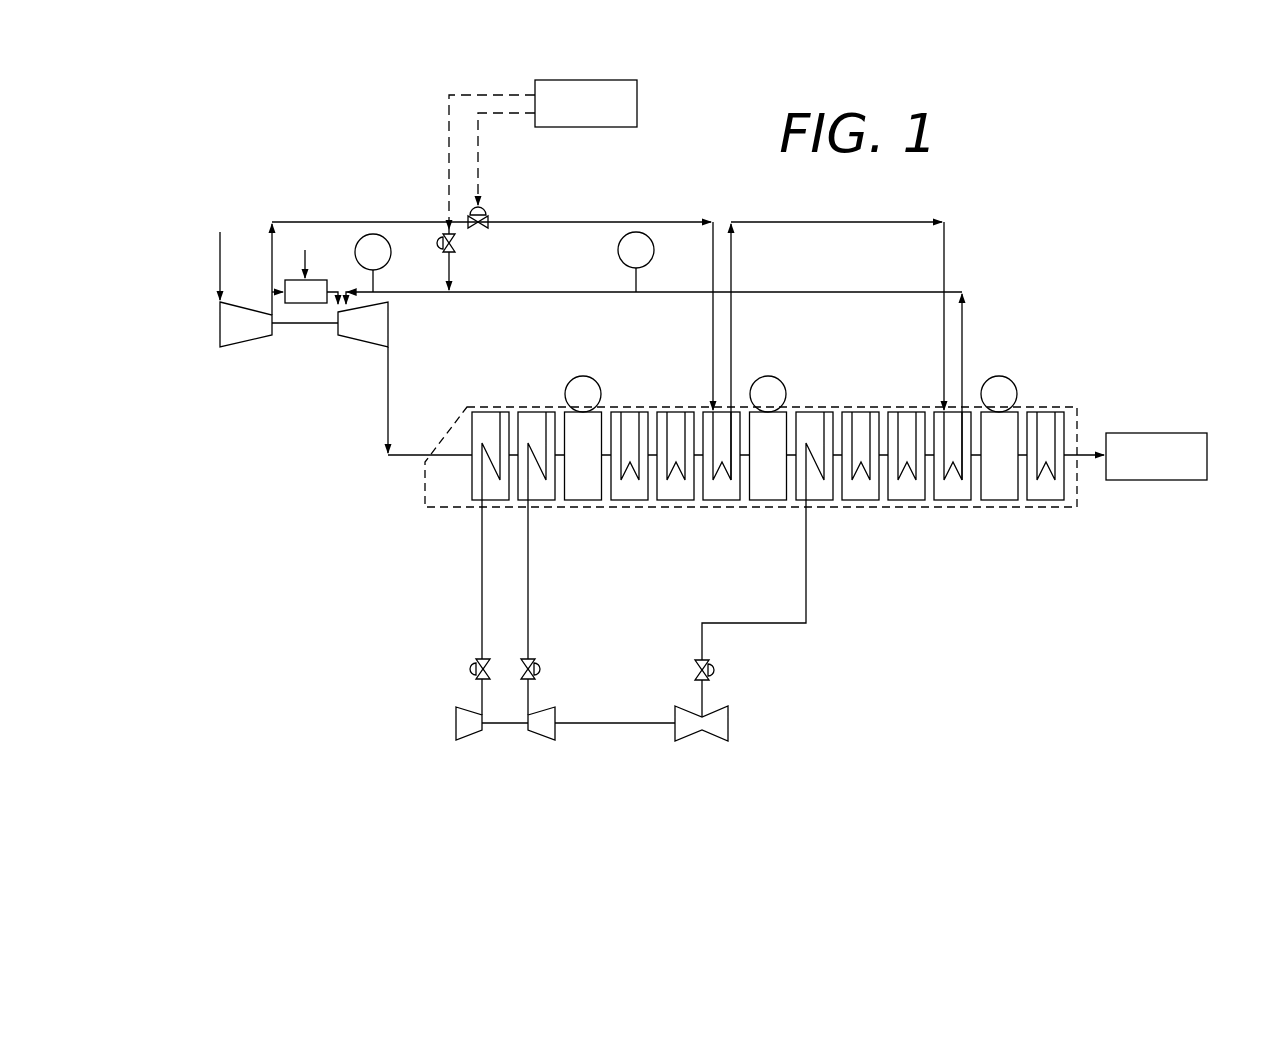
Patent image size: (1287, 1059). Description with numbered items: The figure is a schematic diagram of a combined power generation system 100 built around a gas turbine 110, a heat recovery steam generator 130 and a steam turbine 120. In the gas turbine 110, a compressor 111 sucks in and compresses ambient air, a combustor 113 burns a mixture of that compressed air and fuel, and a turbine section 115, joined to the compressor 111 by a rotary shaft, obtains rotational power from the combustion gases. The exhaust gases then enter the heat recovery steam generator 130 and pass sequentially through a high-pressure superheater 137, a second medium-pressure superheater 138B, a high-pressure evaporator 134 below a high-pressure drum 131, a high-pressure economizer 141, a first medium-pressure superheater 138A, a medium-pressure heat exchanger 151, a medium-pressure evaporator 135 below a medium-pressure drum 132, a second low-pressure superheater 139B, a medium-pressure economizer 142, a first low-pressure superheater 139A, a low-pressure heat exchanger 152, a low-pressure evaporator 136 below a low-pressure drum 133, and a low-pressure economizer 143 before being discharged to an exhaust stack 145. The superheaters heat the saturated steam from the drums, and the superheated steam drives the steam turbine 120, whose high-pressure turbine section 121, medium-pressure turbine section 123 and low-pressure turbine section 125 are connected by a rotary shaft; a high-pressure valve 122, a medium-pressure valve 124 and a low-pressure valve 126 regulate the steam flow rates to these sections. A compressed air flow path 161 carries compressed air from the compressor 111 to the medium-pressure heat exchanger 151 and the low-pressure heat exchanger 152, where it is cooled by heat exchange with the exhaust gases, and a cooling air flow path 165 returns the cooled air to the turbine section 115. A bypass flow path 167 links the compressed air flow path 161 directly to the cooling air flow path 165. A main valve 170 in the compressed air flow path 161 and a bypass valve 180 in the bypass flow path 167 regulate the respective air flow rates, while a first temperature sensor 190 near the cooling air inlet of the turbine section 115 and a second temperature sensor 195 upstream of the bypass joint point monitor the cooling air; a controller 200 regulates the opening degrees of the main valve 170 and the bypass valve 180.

The combined power generation system 100 is at (396, 105).
The gas turbine 110 is at (313, 318).
The compressor 111 is at (227, 323).
The combustor 113 is at (298, 288).
The turbine section 115 is at (368, 335).
The steam turbine 120 is at (589, 645).
The high-pressure turbine section 121 is at (468, 741).
The high-pressure valve 122 is at (482, 659).
The medium-pressure turbine section 123 is at (540, 741).
The medium-pressure valve 124 is at (528, 659).
The low-pressure turbine section 125 is at (714, 742).
The low-pressure valve 126 is at (702, 660).
The heat recovery steam generator 130 is at (697, 455).
The high-pressure drum 131 is at (597, 382).
The medium-pressure drum 132 is at (782, 382).
The low-pressure drum 133 is at (1000, 377).
The high-pressure evaporator 134 is at (583, 500).
The medium-pressure evaporator 135 is at (767, 500).
The low-pressure evaporator 136 is at (1000, 500).
The high-pressure superheater 137 is at (476, 482).
The first medium-pressure superheater 138A is at (667, 500).
The second medium-pressure superheater 138B is at (540, 500).
The first low-pressure superheater 139A is at (897, 500).
The second low-pressure superheater 139B is at (817, 500).
The high-pressure economizer 141 is at (630, 500).
The medium-pressure economizer 142 is at (860, 500).
The low-pressure economizer 143 is at (1048, 500).
The exhaust stack 145 is at (1195, 433).
The medium-pressure heat exchanger 151 is at (718, 500).
The low-pressure heat exchanger 152 is at (950, 500).
The compressed air flow path 161 is at (288, 220).
The cooling air flow path 165 is at (395, 293).
The bypass flow path 167 is at (449, 270).
The main valve 170 is at (488, 219).
The bypass valve 180 is at (458, 243).
The first temperature sensor 190 is at (386, 236).
The second temperature sensor 195 is at (653, 241).
The controller 200 is at (637, 100).